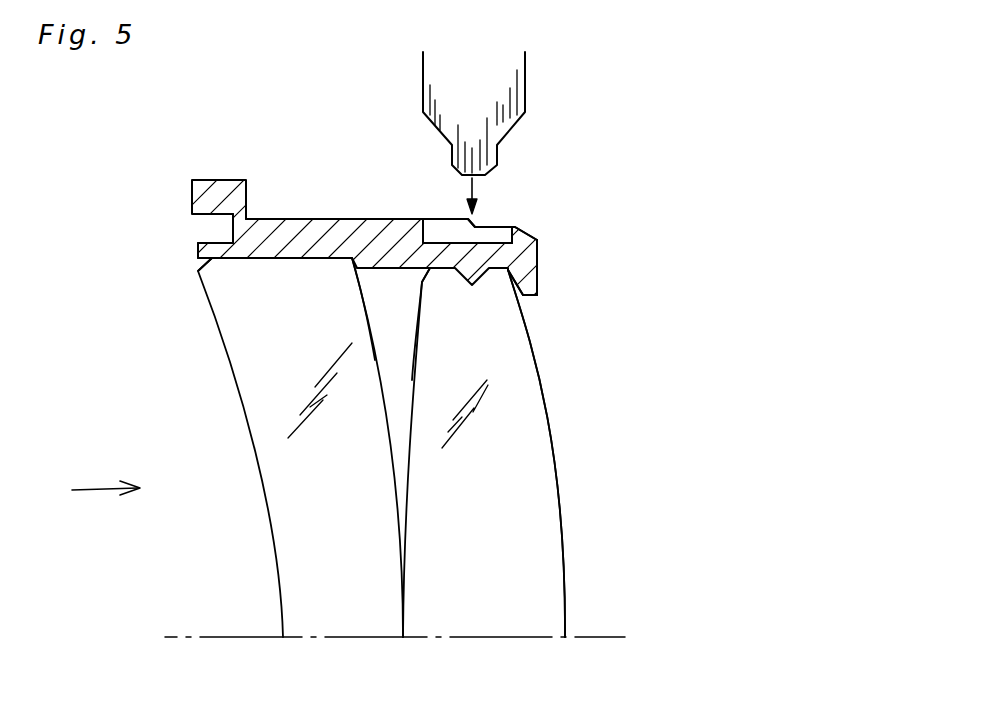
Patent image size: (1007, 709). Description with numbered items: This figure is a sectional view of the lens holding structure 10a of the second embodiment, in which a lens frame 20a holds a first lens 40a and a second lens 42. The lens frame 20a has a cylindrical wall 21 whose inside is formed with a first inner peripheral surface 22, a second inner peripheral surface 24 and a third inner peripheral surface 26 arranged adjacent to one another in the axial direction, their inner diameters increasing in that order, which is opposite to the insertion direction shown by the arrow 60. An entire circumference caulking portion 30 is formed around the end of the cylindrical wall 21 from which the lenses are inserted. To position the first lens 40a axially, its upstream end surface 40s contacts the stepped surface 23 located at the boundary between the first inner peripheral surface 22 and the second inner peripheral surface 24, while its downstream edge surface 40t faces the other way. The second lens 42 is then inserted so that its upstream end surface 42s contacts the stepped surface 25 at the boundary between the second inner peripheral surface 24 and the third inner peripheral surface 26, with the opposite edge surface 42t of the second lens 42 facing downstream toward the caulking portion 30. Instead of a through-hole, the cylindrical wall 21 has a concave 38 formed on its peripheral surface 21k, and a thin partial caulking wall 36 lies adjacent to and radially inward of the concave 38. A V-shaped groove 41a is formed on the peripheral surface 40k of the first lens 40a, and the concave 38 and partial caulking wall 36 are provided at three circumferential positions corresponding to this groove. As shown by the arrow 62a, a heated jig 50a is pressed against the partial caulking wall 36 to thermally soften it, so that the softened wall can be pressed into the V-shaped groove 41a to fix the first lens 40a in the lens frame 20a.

The lens holding structure 10a is at (610, 210).
The cylindrical wall 21 is at (290, 228).
The peripheral surface 21k is at (330, 218).
The entire circumference caulking portion 30 is at (200, 243).
The concave 38 is at (443, 232).
The partial caulking wall 36 is at (465, 252).
The V-shaped groove 41a is at (497, 242).
The lens frame 20a is at (538, 273).
The peripheral surface 40k is at (538, 250).
The first inner peripheral surface 22 is at (538, 294).
The heated jig 50a is at (527, 84).
The arrow 62a is at (466, 182).
The second lens 42 is at (352, 615).
The tooth tip edge 42t is at (210, 260).
The third inner peripheral surface 26 is at (260, 258).
The stepped surface 25 is at (352, 258).
The end surface 42s is at (360, 266).
The first lens 40a is at (490, 615).
The edge surface 40t is at (422, 300).
The end surface 40s is at (566, 478).
The stepped surface 23 is at (503, 270).
The second inner peripheral surface 24 is at (512, 275).
The arrow 60 is at (93, 491).